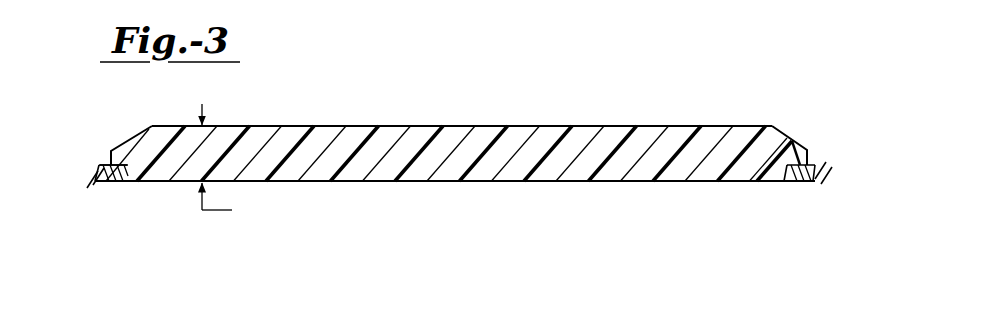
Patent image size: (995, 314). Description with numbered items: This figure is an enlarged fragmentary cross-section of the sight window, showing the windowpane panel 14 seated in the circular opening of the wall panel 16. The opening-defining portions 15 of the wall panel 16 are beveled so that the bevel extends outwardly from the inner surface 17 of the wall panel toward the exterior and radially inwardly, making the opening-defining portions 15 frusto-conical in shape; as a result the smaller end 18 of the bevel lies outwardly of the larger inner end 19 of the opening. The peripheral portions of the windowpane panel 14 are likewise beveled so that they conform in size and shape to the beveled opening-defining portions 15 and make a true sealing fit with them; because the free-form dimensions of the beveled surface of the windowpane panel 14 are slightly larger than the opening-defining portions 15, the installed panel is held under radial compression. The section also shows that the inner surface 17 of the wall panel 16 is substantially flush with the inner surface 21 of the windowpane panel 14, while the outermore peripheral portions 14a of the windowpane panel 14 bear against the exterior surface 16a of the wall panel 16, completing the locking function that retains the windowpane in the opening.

The windowpane panel 14 is at (488, 122).
The outermore peripheral portions 14a is at (796, 144).
The opening-defining portions 15 is at (140, 182).
The wall panel 16 is at (97, 157).
The exterior surface 16a is at (112, 165).
The inner surface 17 is at (104, 186).
The smaller end 18 is at (131, 172).
The larger inner end 19 is at (130, 181).
The inner surface 21 is at (524, 183).